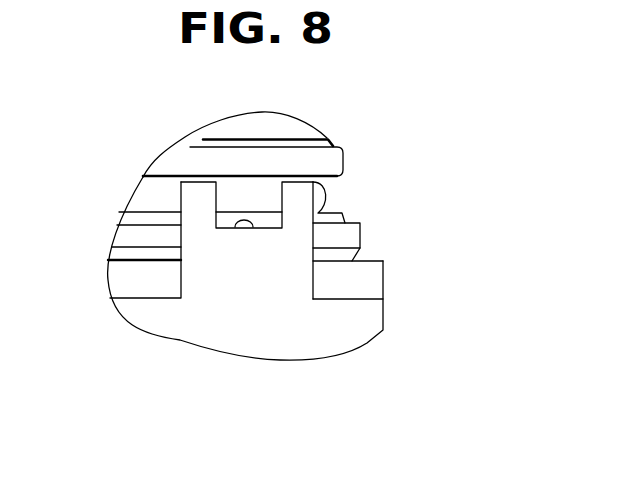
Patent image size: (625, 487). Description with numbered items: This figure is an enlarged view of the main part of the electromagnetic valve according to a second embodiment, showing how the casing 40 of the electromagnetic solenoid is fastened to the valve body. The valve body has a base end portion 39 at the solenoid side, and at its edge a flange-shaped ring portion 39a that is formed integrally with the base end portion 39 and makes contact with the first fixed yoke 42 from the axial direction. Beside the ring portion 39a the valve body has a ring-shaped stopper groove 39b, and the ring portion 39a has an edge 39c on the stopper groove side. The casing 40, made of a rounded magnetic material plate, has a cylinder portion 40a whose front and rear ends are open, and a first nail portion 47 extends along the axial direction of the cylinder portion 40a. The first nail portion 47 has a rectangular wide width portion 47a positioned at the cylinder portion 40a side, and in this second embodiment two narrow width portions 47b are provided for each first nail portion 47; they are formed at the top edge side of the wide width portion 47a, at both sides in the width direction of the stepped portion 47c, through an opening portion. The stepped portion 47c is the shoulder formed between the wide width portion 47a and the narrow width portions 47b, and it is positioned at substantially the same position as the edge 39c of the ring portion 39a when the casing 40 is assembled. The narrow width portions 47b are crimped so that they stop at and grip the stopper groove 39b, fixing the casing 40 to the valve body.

The base end portion 39 is at (352, 157).
The ring portion 39a is at (143, 235).
The stopper groove 39b is at (157, 201).
The edge 39c is at (344, 222).
The casing 40 is at (296, 277).
The cylinder portion 40a is at (340, 332).
The first fixed yoke 42 is at (370, 285).
The first nail portion 47 is at (176, 276).
The wide width portion 47a is at (268, 258).
The narrow width portion 47b is at (200, 197).
The stepped portion 47c is at (233, 226).